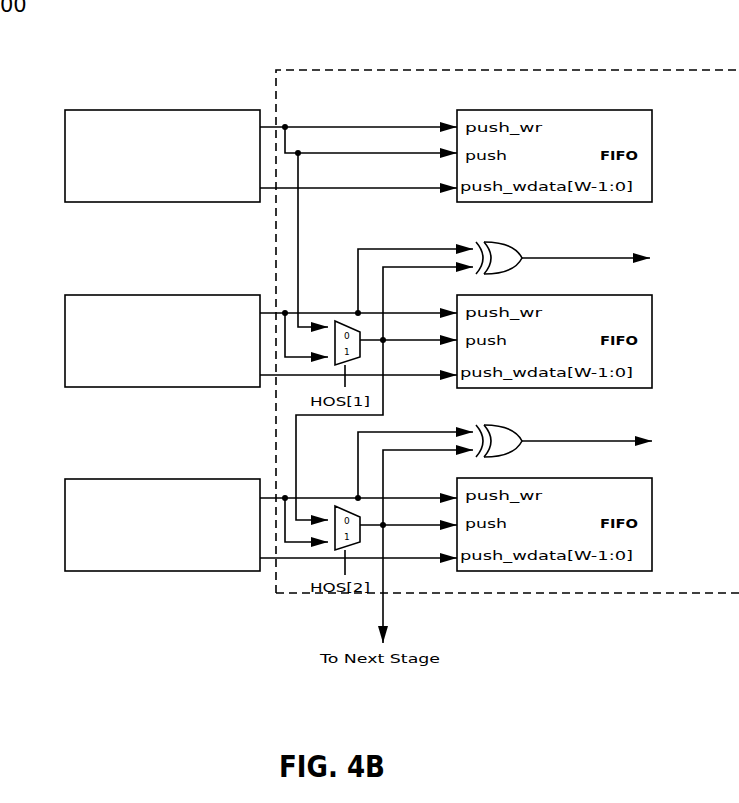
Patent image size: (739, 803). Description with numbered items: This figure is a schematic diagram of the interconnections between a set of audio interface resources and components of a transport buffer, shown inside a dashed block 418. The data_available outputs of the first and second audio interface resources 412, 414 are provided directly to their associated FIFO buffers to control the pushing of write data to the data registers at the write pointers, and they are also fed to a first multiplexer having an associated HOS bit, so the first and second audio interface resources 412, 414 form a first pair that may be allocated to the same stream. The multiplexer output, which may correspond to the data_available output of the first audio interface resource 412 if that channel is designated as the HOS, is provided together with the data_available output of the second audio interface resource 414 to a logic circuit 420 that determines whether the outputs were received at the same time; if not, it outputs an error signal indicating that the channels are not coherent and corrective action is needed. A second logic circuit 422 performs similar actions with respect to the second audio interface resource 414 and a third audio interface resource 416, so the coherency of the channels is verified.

The first audio interface resource 412 is at (73, 157).
The second audio interface resource 414 is at (73, 335).
The third audio interface resource 416 is at (73, 509).
The coherency check stage 418 is at (328, 70).
The logic circuit 420 is at (497, 237).
The second logic circuit 422 is at (505, 422).